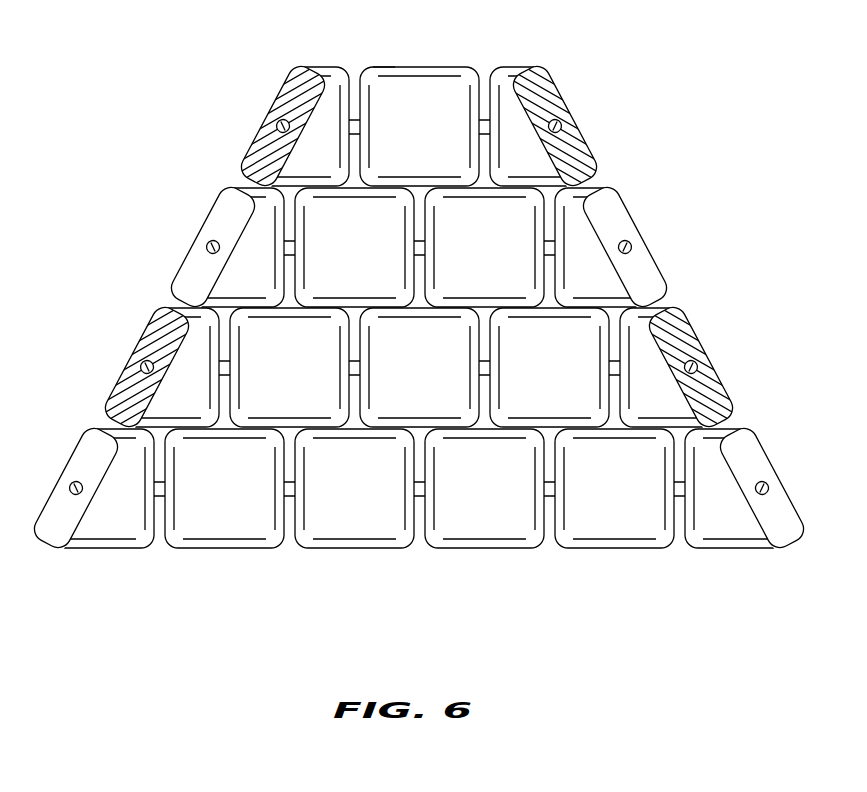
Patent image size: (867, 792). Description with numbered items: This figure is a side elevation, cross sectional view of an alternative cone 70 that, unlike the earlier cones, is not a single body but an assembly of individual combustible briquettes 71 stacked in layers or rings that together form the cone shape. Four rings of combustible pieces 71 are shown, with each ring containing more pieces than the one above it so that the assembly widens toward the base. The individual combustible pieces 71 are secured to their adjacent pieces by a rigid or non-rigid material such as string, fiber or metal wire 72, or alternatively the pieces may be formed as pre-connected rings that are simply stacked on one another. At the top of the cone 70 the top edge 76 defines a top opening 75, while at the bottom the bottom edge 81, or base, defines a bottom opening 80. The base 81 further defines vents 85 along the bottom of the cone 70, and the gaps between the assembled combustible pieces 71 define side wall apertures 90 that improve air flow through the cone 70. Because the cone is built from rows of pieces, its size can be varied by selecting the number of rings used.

The cone 70 is at (647, 235).
The combustible briquettes 71 is at (678, 325).
The string, fiber or metal wire 72 is at (145, 365).
The top opening 75 is at (430, 118).
The top edge 76 is at (383, 67).
The bottom opening 80 is at (358, 528).
The bottom edge 81 is at (483, 548).
The vents 85 is at (677, 542).
The side wall apertures 90 is at (229, 424).